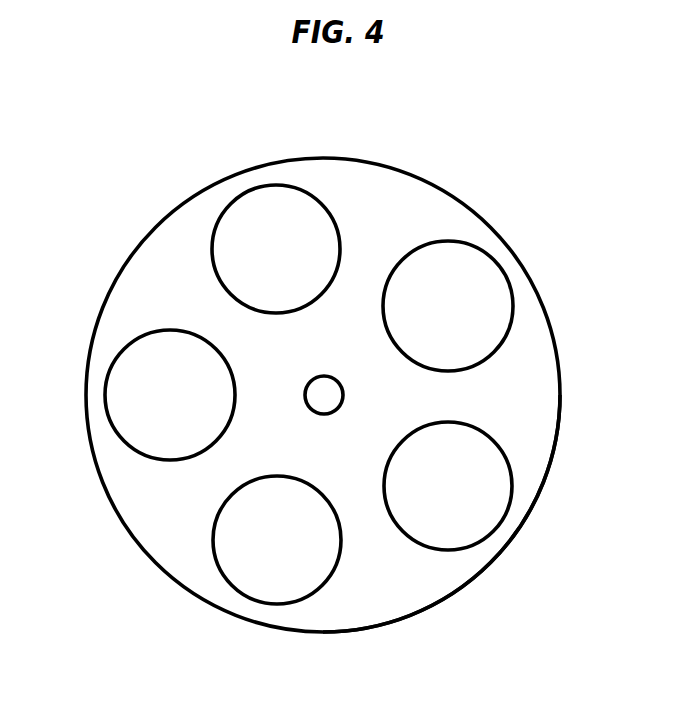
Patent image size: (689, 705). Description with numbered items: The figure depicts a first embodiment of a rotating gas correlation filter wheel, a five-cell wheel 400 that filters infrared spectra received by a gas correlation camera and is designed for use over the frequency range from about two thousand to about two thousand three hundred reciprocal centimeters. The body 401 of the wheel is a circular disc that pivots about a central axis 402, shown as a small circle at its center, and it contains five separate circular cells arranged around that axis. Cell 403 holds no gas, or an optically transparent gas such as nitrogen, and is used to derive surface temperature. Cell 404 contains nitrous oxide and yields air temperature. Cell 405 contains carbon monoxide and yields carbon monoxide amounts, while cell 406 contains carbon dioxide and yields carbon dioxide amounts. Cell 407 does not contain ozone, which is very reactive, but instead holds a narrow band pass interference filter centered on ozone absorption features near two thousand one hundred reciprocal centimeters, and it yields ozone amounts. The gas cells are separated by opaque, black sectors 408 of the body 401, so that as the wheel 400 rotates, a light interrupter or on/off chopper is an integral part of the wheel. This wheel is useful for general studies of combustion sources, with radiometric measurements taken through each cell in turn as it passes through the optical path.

The 5-cell wheel 400 is at (497, 139).
The body 401 is at (162, 252).
The axis 402 is at (303, 396).
The cell 403 is at (262, 210).
The cell 404 is at (493, 295).
The cell 405 is at (490, 474).
The cell 406 is at (285, 567).
The cell 407 is at (147, 403).
The opaque, black sectors 408 is at (380, 565).